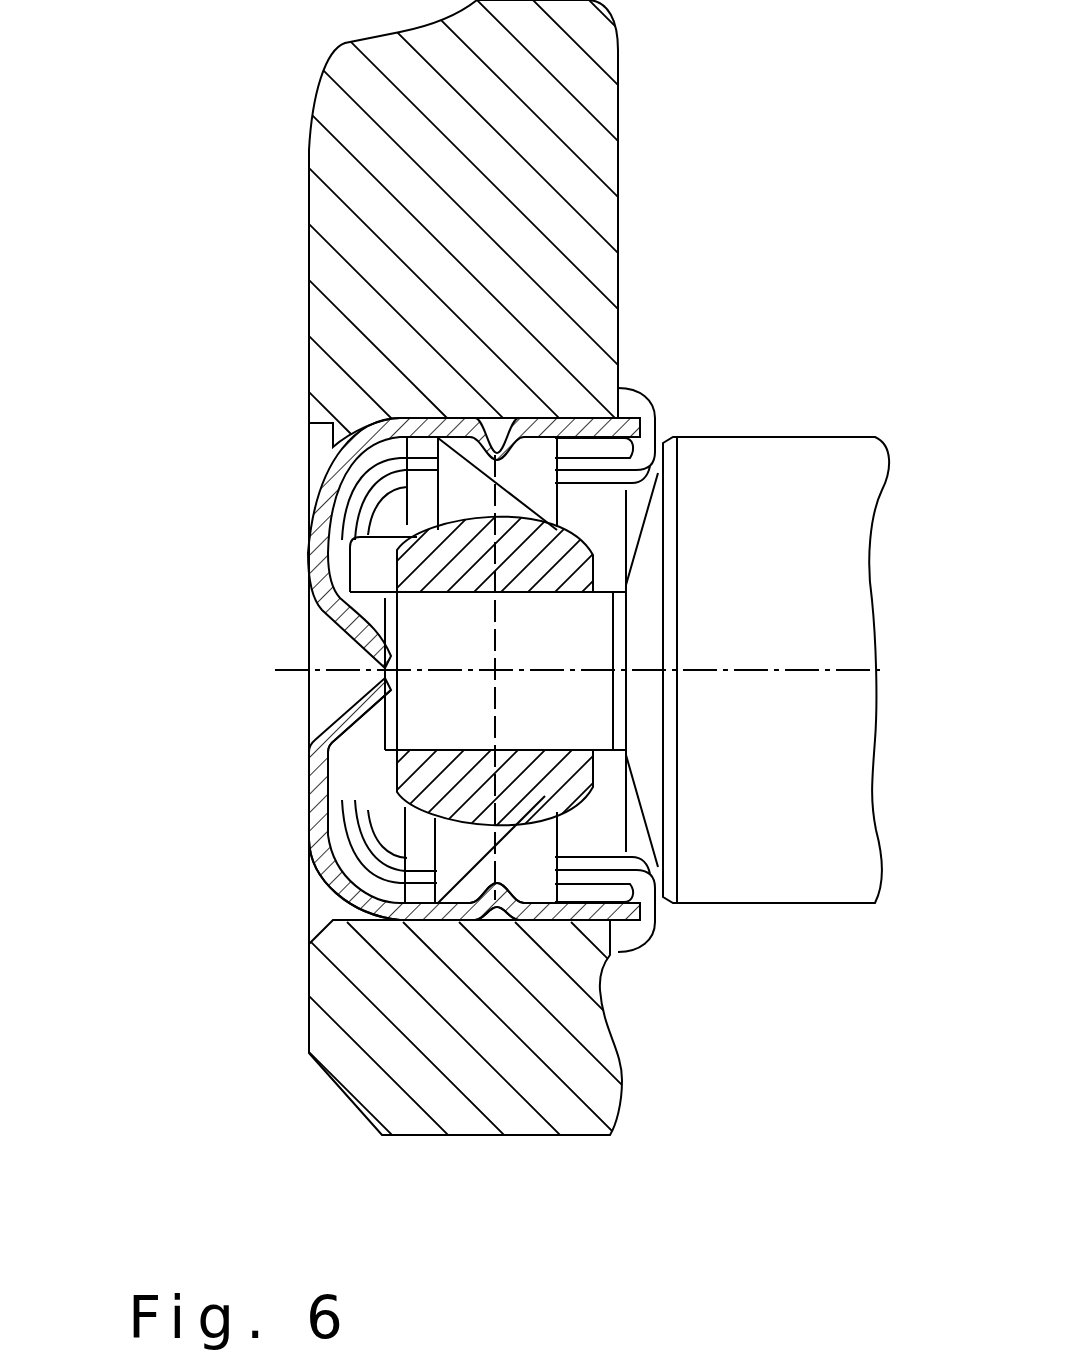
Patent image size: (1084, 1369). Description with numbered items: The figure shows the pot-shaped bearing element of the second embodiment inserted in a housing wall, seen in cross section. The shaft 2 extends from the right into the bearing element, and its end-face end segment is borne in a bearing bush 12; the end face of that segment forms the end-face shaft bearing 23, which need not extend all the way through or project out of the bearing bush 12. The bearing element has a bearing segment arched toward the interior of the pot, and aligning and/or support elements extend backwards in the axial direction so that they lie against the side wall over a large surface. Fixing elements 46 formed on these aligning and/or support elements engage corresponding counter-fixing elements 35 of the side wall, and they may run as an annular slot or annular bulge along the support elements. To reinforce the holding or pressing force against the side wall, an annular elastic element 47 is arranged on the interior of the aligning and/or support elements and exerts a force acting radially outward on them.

The elastic element 47 is at (648, 408).
The bearing bush 12 is at (445, 560).
The end-face shaft bearing 23 is at (330, 748).
The counter-fixing elements 35 is at (334, 1004).
The fixing elements 46 is at (480, 922).
The shaft 2 is at (500, 680).